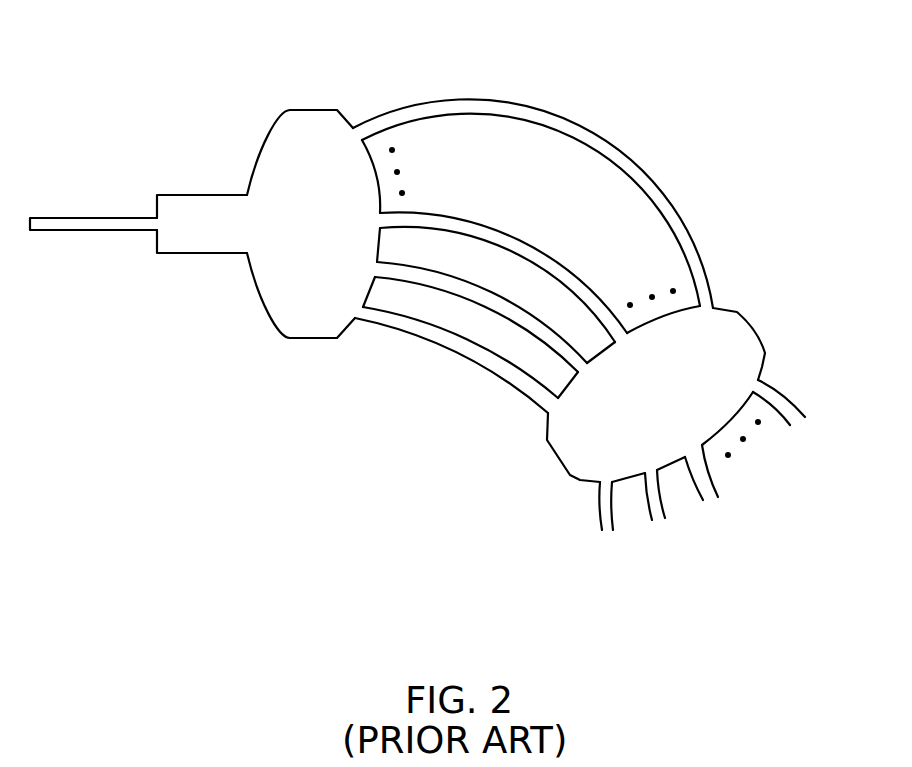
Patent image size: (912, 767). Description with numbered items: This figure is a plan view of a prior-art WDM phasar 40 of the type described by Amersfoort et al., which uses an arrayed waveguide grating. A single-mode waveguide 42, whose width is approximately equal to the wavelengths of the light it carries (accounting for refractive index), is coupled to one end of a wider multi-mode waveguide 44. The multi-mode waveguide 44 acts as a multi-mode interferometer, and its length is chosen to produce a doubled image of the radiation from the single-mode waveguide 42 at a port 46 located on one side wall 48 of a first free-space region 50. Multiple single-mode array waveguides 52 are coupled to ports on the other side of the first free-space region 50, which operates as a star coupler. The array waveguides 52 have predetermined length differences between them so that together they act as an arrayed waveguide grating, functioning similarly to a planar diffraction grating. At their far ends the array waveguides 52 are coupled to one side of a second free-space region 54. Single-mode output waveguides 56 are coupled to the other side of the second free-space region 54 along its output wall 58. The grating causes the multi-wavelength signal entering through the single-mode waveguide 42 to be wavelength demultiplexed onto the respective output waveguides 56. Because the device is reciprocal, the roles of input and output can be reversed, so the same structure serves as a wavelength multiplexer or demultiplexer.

The WDM phasar 40 is at (450, 295).
The single-mode waveguide 42 is at (90, 232).
The multi-mode waveguide 44 is at (195, 202).
The port 46 is at (240, 222).
The side wall 48 is at (270, 315).
The first free-space region 50 is at (307, 122).
The array waveguides 52 is at (420, 112).
The second free-space region 54 is at (743, 338).
The output waveguides 56 is at (782, 395).
The output wall 58 is at (762, 367).